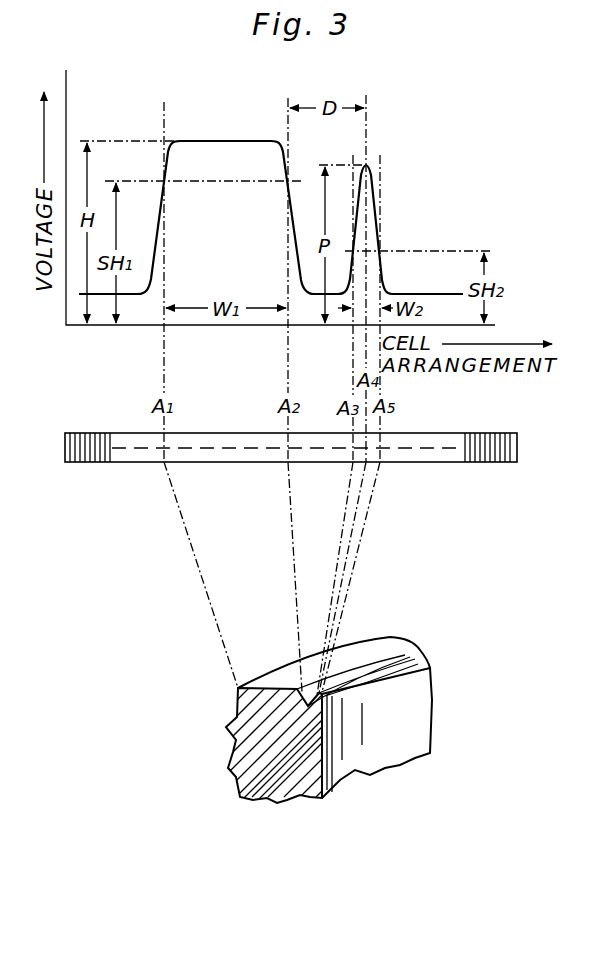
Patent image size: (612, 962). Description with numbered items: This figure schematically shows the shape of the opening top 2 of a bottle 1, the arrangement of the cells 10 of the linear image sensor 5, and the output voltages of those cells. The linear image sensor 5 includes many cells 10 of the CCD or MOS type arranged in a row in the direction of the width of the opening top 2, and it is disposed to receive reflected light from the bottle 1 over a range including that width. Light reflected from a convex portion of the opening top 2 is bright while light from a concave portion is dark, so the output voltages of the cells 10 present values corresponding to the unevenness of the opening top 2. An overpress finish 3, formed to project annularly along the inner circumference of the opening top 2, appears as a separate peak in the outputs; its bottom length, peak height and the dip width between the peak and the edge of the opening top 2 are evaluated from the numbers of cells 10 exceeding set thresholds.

The bottle 1 is at (235, 788).
The opening top 2 is at (265, 678).
The overpress finish 3 is at (393, 667).
The linear image sensor 5 is at (498, 433).
The cells 10 is at (101, 463).